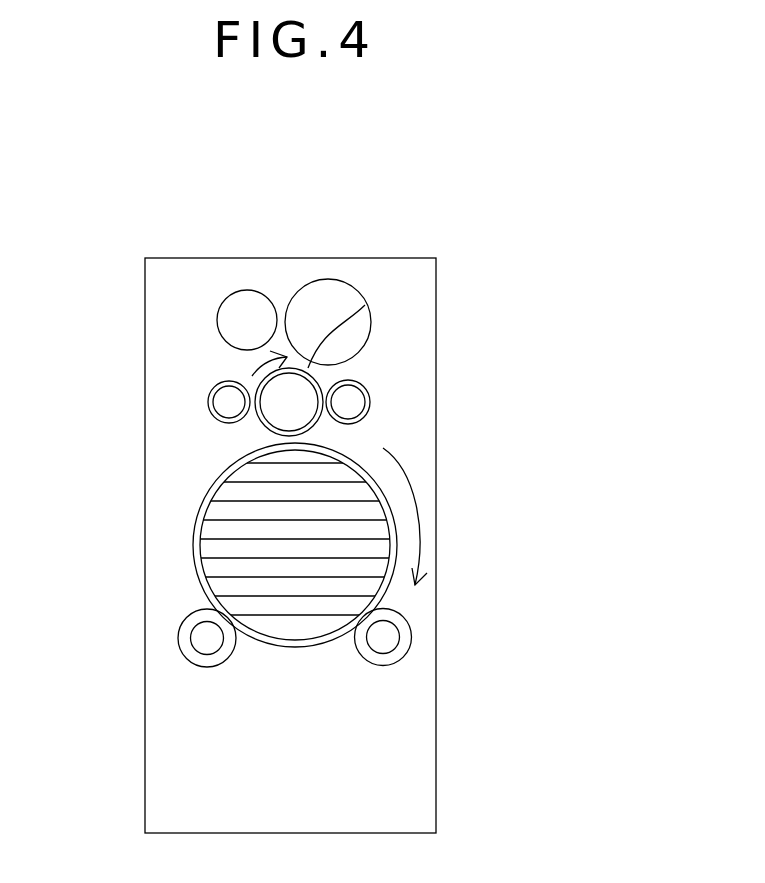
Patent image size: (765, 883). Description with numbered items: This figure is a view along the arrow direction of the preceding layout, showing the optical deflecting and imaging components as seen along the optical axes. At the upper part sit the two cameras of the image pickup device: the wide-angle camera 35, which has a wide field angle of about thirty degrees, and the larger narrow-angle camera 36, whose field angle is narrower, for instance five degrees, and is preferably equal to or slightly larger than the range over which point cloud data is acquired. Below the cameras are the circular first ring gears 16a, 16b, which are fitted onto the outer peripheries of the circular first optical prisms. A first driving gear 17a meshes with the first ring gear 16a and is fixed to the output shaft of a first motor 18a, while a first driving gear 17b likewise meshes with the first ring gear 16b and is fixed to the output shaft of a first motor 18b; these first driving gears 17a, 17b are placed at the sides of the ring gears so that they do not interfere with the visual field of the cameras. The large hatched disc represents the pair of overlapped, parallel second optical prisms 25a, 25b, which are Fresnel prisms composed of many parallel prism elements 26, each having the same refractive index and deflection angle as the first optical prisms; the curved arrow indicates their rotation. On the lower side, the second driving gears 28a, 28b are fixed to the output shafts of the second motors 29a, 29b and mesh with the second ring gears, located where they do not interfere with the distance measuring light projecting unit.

The wide-angle camera 35 is at (235, 292).
The narrow-angle camera 36 is at (337, 278).
The first ring gear 16a is at (416, 287).
The first ring gear 16b is at (365, 305).
The first driving gear 17a is at (366, 390).
The first driving gear 17b is at (212, 390).
The first motor 18a is at (367, 416).
The first motor 18b is at (210, 412).
The second optical prism 25a is at (498, 516).
The second optical prism 25b is at (378, 490).
The prism element 26 is at (297, 610).
The second driving gear 28a is at (410, 650).
The second driving gear 28b is at (178, 638).
The second motor 29a is at (398, 628).
The second motor 29b is at (192, 631).